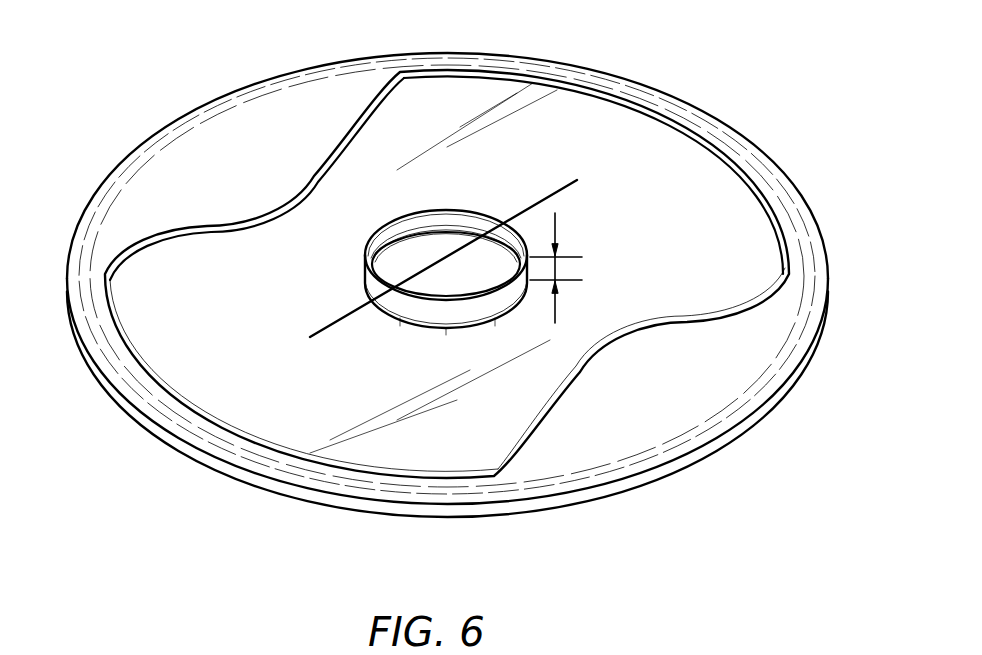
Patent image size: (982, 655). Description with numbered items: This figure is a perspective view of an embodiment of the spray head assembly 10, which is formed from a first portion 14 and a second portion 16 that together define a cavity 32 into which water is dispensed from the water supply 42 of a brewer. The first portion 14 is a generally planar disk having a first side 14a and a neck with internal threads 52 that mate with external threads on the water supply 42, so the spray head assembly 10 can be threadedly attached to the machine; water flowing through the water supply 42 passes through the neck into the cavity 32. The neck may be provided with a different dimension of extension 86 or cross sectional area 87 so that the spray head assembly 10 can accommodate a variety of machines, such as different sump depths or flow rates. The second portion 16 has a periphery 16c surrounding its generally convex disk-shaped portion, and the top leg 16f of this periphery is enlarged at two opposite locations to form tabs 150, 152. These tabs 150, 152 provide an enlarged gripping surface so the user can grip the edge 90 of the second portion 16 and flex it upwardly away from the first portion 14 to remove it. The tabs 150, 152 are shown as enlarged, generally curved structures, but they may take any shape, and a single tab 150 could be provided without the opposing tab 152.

The spray head assembly 10 is at (806, 416).
The first portion 14 is at (270, 402).
The first side 14a is at (197, 373).
The second portion 16 is at (272, 491).
The periphery 16c is at (357, 508).
The top leg 16f is at (430, 482).
The cavity 32 is at (475, 287).
The water supply 42 is at (408, 313).
The internal threads 52 is at (456, 214).
The dimension of extension 86 is at (557, 242).
The cross sectional area 87 is at (447, 256).
The edge 90 is at (345, 125).
The tab 150 is at (272, 172).
The tab 152 is at (640, 420).